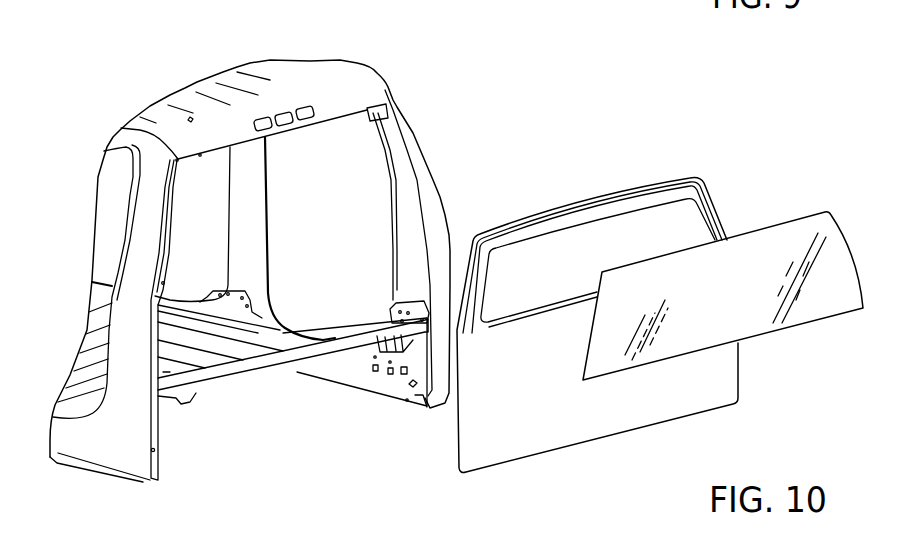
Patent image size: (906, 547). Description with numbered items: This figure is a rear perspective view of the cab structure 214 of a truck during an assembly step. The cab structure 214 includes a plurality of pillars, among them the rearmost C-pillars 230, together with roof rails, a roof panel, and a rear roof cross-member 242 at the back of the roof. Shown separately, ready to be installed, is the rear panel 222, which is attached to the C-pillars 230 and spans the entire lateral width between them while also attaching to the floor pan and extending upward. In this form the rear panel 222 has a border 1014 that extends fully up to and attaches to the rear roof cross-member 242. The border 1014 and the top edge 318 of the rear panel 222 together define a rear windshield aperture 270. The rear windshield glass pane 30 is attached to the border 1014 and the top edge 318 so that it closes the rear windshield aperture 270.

The cab structure 214 is at (163, 79).
The rear roof cross-member 242 is at (325, 108).
The C-pillar 230 is at (147, 215).
The top edge 318 is at (588, 297).
The rear windshield aperture 270 is at (627, 243).
The border 1014 is at (715, 218).
The rear windshield glass pane 30 is at (743, 325).
The rear panel 222 is at (537, 470).